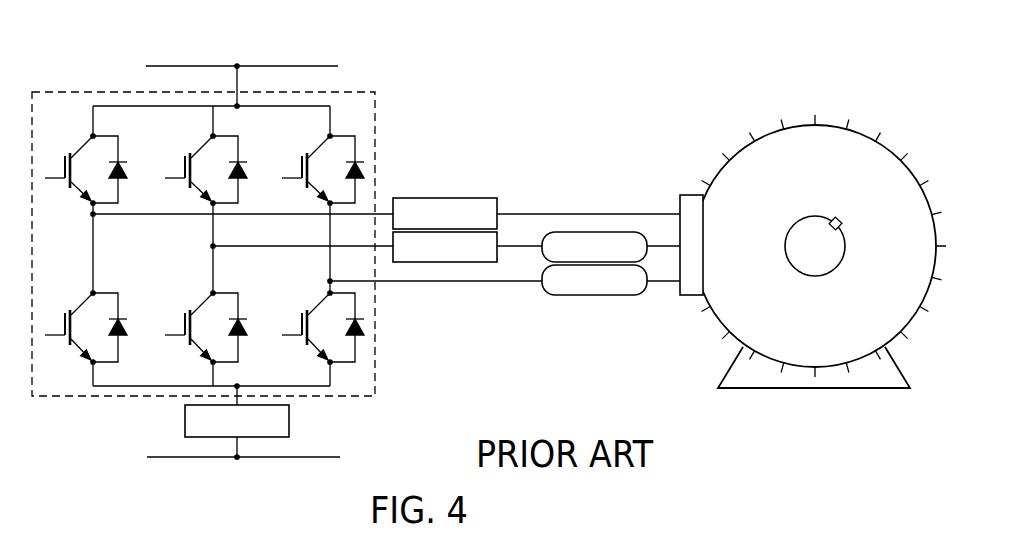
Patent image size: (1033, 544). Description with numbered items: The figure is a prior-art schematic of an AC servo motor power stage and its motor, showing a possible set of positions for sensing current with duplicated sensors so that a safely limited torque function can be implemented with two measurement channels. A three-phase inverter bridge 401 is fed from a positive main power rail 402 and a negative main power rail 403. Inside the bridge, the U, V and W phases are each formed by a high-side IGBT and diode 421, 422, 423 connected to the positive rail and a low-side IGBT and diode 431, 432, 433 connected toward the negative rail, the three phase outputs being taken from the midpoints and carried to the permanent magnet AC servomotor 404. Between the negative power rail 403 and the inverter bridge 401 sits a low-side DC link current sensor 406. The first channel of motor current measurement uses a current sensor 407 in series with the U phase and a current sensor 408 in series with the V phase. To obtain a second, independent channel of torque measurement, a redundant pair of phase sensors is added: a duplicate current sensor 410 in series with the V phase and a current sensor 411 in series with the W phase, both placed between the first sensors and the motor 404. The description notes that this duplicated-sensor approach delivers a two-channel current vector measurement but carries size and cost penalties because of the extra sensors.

The three-phase inverter bridge 401 is at (242, 244).
The main power rail, positive 402 is at (352, 63).
The main power rail, negative 403 is at (342, 457).
The permanent magnet AC servomotor 404 is at (724, 350).
The low-side DC link current sensor 406 is at (290, 421).
The current sensor in series with the U phase 407 is at (446, 198).
The current sensor in series with the V phase 408 is at (502, 233).
The duplicate current sensor in series with the V phase 410 is at (541, 260).
The current sensor in series with the W phase 411 is at (565, 296).
The high-side IGBT and diode, U phase 421 is at (81, 149).
The high-side IGBT and diode, V phase 422 is at (203, 149).
The high-side IGBT and diode, W phase 423 is at (317, 149).
The low-side IGBT and diode, U phase 431 is at (81, 306).
The low-side IGBT and diode, V phase 432 is at (203, 306).
The low-side IGBT and diode, W phase 433 is at (319, 306).